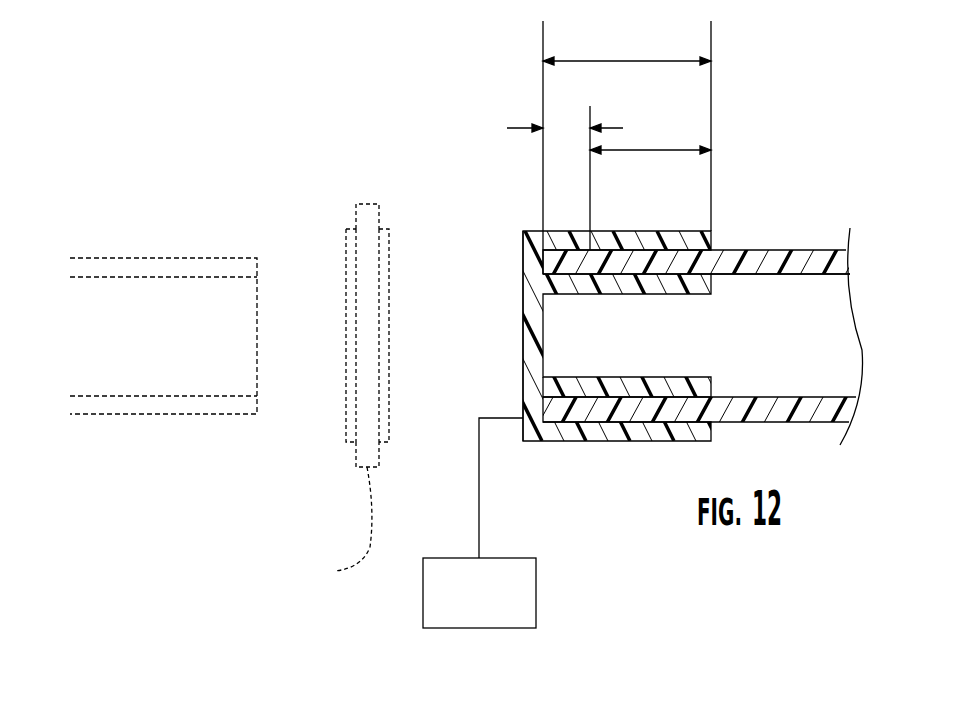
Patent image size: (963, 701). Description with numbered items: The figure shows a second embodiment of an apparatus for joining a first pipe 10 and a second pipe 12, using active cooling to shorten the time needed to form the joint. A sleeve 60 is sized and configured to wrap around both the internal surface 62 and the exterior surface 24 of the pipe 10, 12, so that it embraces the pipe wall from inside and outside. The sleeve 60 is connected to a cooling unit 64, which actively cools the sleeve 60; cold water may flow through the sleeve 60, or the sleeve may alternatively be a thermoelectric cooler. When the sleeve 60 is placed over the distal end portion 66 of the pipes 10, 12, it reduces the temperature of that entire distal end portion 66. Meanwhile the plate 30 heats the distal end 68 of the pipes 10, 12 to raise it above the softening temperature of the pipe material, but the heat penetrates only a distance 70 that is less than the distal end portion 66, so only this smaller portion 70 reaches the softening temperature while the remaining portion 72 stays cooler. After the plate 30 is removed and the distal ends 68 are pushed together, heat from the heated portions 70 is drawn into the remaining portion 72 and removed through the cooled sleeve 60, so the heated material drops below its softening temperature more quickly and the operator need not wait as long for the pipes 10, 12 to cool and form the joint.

The first pipe 10 is at (141, 231).
The plate 30 is at (370, 183).
The second pipe 12 is at (797, 233).
The exterior surface 24 is at (752, 249).
The internal surface 62 is at (768, 277).
The sleeve 60 is at (653, 231).
The distal end 68 is at (542, 261).
The distal end portion 66 is at (632, 60).
The remaining portion 72 is at (660, 148).
The heated portion 70 is at (521, 127).
The cooling unit 64 is at (536, 589).